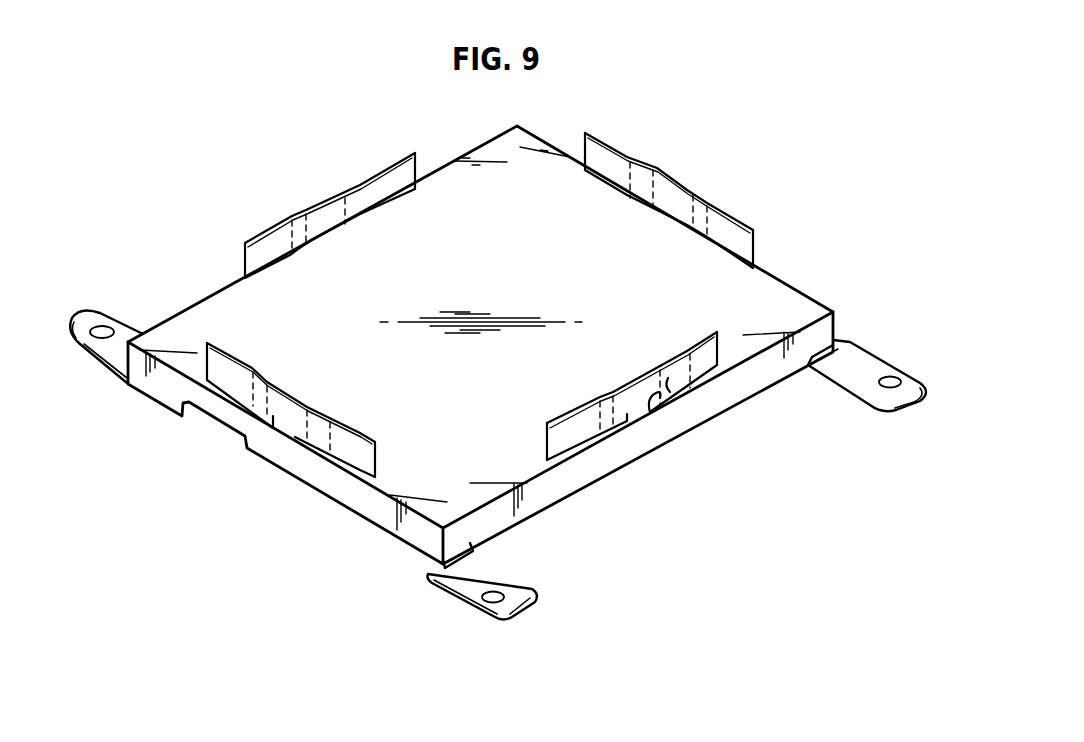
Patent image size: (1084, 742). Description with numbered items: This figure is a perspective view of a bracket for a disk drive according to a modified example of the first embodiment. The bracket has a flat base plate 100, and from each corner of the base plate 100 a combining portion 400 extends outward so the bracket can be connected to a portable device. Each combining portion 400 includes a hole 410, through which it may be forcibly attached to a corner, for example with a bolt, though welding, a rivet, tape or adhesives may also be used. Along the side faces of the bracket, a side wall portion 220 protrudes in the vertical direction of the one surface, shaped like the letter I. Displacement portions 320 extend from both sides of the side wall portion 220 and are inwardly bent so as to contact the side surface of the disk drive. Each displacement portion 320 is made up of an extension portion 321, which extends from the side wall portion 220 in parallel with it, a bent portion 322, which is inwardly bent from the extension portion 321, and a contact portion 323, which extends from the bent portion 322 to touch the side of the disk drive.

The base plate 100 is at (780, 296).
The side wall portion 220 is at (636, 397).
The displacement portion 320 is at (593, 445).
The extension portion 321 is at (652, 412).
The bent portion 322 is at (672, 388).
The contact portion 323 is at (703, 362).
The combining portion 400 is at (530, 588).
The hole 410 is at (497, 590).